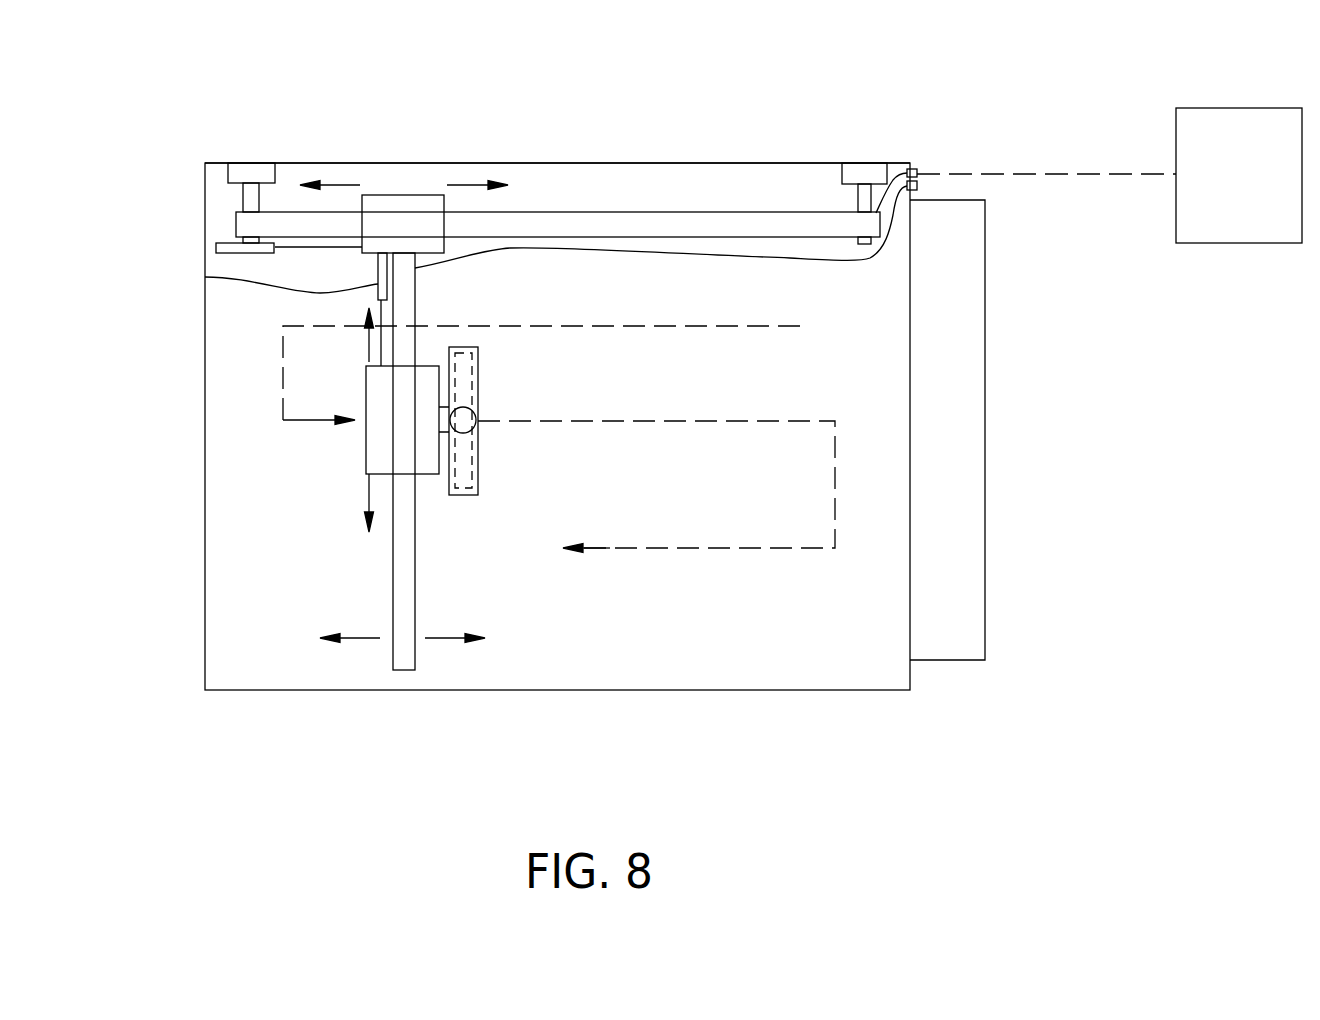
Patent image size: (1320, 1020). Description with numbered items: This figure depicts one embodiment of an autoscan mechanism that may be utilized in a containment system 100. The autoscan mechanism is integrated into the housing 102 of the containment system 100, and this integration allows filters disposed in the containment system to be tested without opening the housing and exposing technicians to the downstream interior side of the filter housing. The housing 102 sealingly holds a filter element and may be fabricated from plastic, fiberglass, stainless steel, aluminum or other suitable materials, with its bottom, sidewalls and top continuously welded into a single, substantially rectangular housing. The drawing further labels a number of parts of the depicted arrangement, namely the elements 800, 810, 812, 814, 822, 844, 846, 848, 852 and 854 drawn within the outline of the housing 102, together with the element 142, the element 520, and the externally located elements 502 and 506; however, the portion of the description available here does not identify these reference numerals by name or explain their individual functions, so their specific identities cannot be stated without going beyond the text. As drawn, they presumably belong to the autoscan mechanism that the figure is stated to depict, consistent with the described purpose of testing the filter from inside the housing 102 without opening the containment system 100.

The containment system 100 is at (835, 45).
The housing 102 is at (205, 658).
The tool head 142 is at (480, 372).
The communication link 502 is at (928, 145).
The controller 506 is at (1268, 183).
The side compartment 520 is at (985, 350).
The positioning system 800 is at (250, 334).
The upper carriage 810 is at (420, 195).
The lower carriage 812 is at (428, 366).
The cable 814 is at (745, 252).
The connector 822 is at (897, 162).
The horizontal track 844 is at (380, 160).
The guide rail 846 is at (658, 212).
The vertical shaft 848 is at (405, 577).
The mounting bracket 852 is at (224, 243).
The cable 854 is at (205, 277).